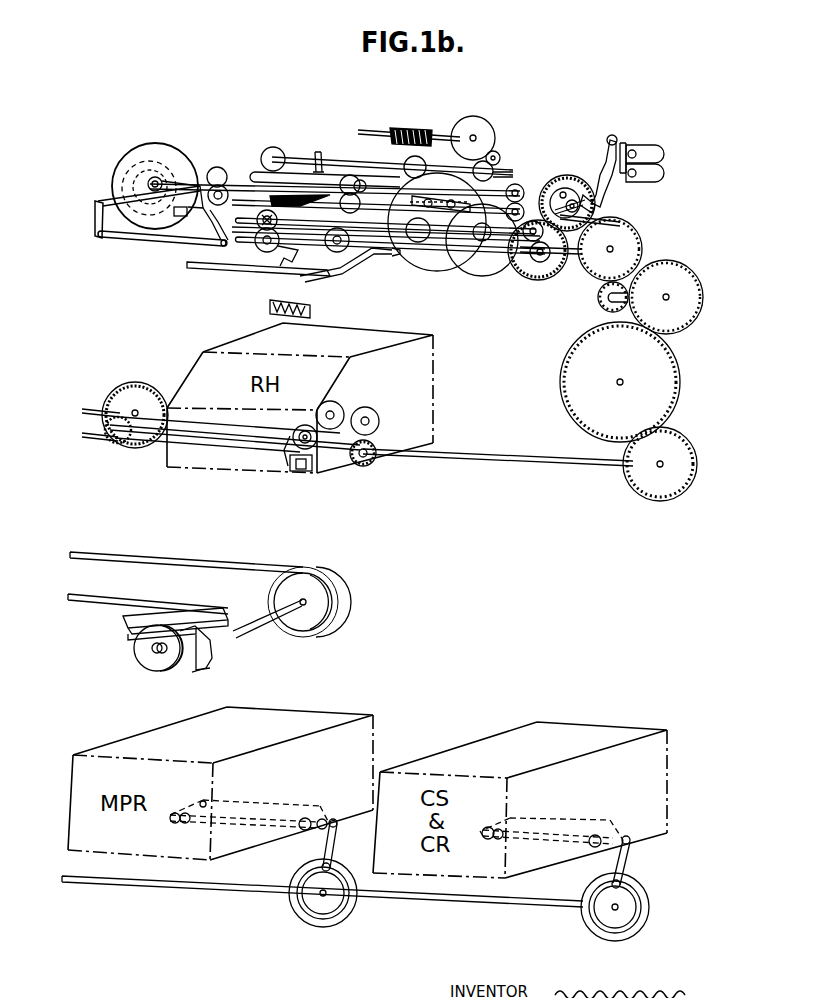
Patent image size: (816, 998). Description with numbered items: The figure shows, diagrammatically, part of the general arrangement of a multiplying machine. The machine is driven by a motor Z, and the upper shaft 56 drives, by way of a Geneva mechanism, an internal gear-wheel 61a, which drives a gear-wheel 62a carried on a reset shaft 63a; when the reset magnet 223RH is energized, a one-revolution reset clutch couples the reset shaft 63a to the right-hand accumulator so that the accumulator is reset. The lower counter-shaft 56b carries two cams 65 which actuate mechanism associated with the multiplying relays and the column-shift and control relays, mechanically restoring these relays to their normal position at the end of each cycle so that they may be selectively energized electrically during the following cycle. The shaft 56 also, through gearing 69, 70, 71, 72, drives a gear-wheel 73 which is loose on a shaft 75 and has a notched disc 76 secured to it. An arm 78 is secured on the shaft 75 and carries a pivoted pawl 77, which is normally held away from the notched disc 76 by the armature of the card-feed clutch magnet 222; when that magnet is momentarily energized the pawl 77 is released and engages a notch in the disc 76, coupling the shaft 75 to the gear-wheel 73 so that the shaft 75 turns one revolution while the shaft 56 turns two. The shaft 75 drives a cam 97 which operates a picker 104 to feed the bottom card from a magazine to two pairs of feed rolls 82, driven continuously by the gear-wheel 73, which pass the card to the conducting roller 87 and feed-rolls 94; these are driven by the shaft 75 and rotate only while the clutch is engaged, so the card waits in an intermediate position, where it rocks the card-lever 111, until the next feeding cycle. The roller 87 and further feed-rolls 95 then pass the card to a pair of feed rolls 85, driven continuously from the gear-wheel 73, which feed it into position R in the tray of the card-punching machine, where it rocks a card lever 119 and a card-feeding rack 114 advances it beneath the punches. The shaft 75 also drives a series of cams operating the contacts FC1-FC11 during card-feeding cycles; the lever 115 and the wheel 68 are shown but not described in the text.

The cam 97 is at (128, 153).
The lever 115 is at (180, 180).
The feed rolls 82 is at (213, 167).
The feed-rolls 94 is at (270, 148).
The conducting roller 87 is at (340, 184).
The card-lever 111 is at (317, 151).
The contacts FC1-FC11 is at (412, 126).
The shaft 75 is at (528, 183).
The gear-wheel 73 is at (558, 175).
The notched disc 76 is at (569, 190).
The arm 78 is at (598, 186).
The card-feed clutch magnet 222 is at (660, 150).
The pawl 77 is at (622, 223).
The gearing 72 is at (632, 241).
The gearing 70 is at (676, 272).
The gearing 71 is at (598, 299).
The picker 104 is at (180, 217).
The position R is at (190, 268).
The feed-rolls 95 is at (262, 230).
The feed rolls 85 is at (262, 252).
The card lever 119 is at (285, 258).
The card-feeding rack 114 is at (340, 310).
The internal gear-wheel 61a is at (135, 383).
The gear-wheel 62a is at (120, 445).
The reset shaft 63a is at (230, 444).
The reset magnet 223RH is at (304, 472).
The shaft 56 is at (517, 465).
The gearing 69 is at (570, 378).
The pulley 68 is at (647, 484).
The motor Z is at (197, 650).
The cams 65 is at (297, 910).
The lower counter-shaft 56b is at (472, 897).